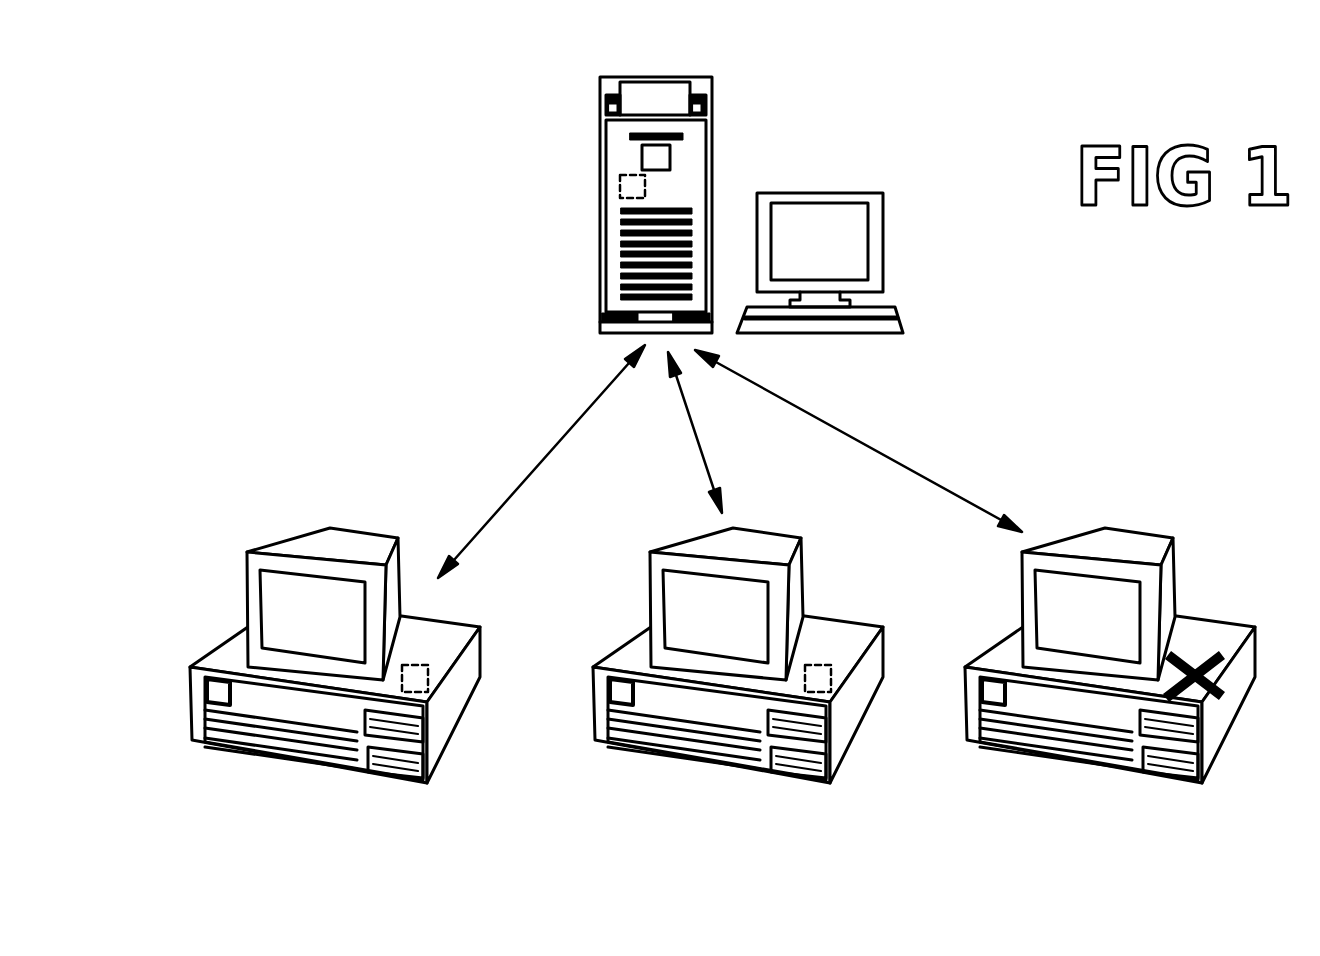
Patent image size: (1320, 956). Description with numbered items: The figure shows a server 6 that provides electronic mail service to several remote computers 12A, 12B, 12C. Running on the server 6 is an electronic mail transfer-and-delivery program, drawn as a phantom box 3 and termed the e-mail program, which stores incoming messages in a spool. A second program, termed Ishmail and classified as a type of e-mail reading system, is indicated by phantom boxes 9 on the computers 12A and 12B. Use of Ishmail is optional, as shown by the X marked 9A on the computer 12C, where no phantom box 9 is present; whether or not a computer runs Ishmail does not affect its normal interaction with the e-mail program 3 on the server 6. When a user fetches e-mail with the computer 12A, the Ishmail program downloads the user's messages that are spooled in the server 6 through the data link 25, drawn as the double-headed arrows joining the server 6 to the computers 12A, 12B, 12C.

The e-mail program 3 is at (615, 195).
The server 6 is at (600, 247).
The data link 25 is at (568, 437).
The computer 12A is at (372, 775).
The computer 12B is at (775, 778).
The computer 12C is at (1145, 778).
The Ishmail program 9 is at (430, 683).
The missing/disabled client agent 9A is at (1200, 688).